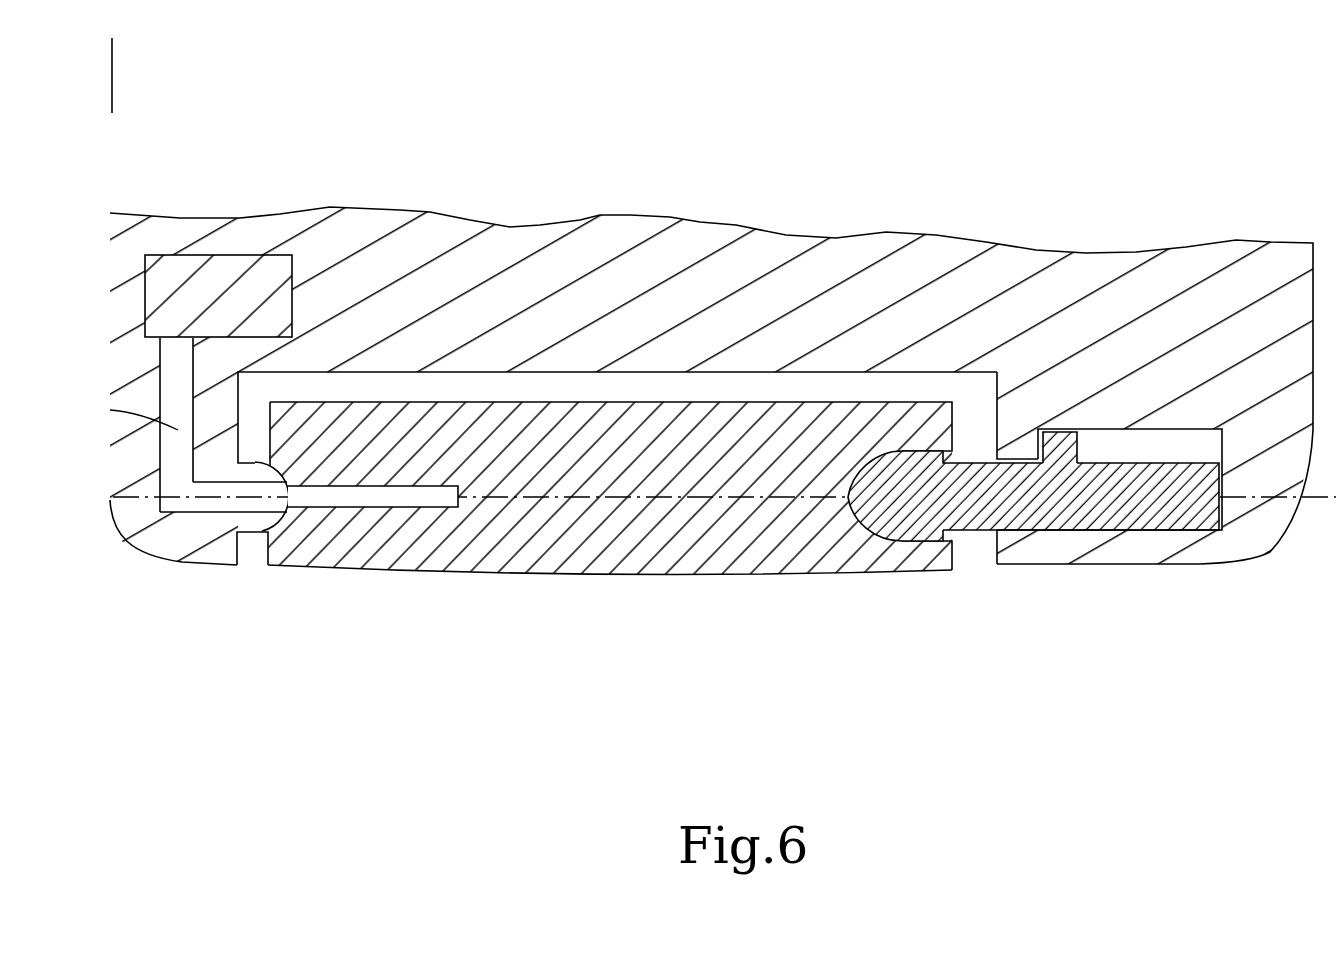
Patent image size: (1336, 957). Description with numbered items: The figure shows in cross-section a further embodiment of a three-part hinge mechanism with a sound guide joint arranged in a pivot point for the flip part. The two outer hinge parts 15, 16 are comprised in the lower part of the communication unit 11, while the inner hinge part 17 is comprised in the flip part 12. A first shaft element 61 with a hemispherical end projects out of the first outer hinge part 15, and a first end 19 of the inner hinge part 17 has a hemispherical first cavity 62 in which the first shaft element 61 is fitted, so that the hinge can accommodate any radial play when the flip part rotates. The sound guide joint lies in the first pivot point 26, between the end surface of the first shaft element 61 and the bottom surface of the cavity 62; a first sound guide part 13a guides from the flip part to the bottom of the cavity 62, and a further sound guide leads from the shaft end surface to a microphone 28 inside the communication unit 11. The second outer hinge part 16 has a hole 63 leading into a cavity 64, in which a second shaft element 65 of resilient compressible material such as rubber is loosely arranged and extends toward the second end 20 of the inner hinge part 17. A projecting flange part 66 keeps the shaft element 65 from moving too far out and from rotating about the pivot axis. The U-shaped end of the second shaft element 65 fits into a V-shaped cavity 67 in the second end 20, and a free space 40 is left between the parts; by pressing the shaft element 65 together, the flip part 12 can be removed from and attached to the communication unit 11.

The communication unit 11 is at (141, 31).
The flip part 12 is at (757, 595).
The first sound guide part 13a is at (327, 497).
The first outer hinge part 15 is at (167, 558).
The second outer hinge part 16 is at (1173, 563).
The inner hinge part 17 is at (607, 575).
The first end 19 is at (345, 567).
The second end 20 is at (880, 570).
The first pivot point 26 is at (270, 535).
The microphone 28 is at (198, 310).
The clearance gap 40 is at (967, 547).
The first shaft element 61 is at (268, 460).
The hemispherical first cavity 62 is at (303, 403).
The hole 63 is at (1022, 448).
The cavity 64 is at (1145, 447).
The second shaft element 65 is at (1053, 505).
The projecting flange part 66 is at (1083, 433).
The V-shaped cavity 67 is at (856, 492).